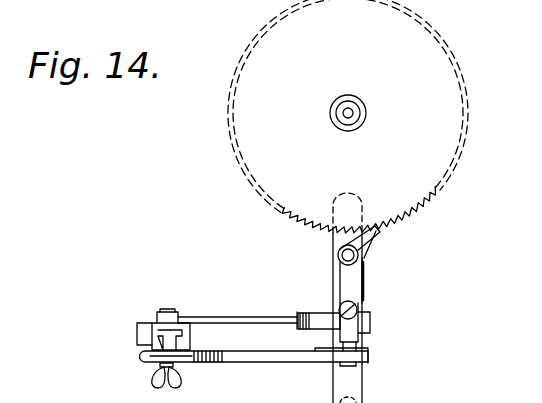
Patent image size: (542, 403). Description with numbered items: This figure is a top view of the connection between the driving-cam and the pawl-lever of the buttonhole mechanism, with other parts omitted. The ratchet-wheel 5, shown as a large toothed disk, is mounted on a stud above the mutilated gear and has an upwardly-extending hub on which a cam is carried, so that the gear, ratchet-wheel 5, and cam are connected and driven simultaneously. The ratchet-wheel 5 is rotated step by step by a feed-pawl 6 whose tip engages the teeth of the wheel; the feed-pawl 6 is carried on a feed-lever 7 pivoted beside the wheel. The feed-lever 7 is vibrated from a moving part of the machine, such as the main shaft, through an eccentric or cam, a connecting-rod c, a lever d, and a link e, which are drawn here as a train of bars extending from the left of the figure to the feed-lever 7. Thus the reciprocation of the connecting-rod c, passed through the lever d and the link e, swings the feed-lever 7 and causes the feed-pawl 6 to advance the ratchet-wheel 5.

The ratchet-wheel 5 is at (440, 190).
The feed-pawl 6 is at (367, 242).
The feed-lever 7 is at (352, 290).
The connecting-rod c is at (267, 316).
The lever d is at (142, 332).
The link e is at (250, 363).